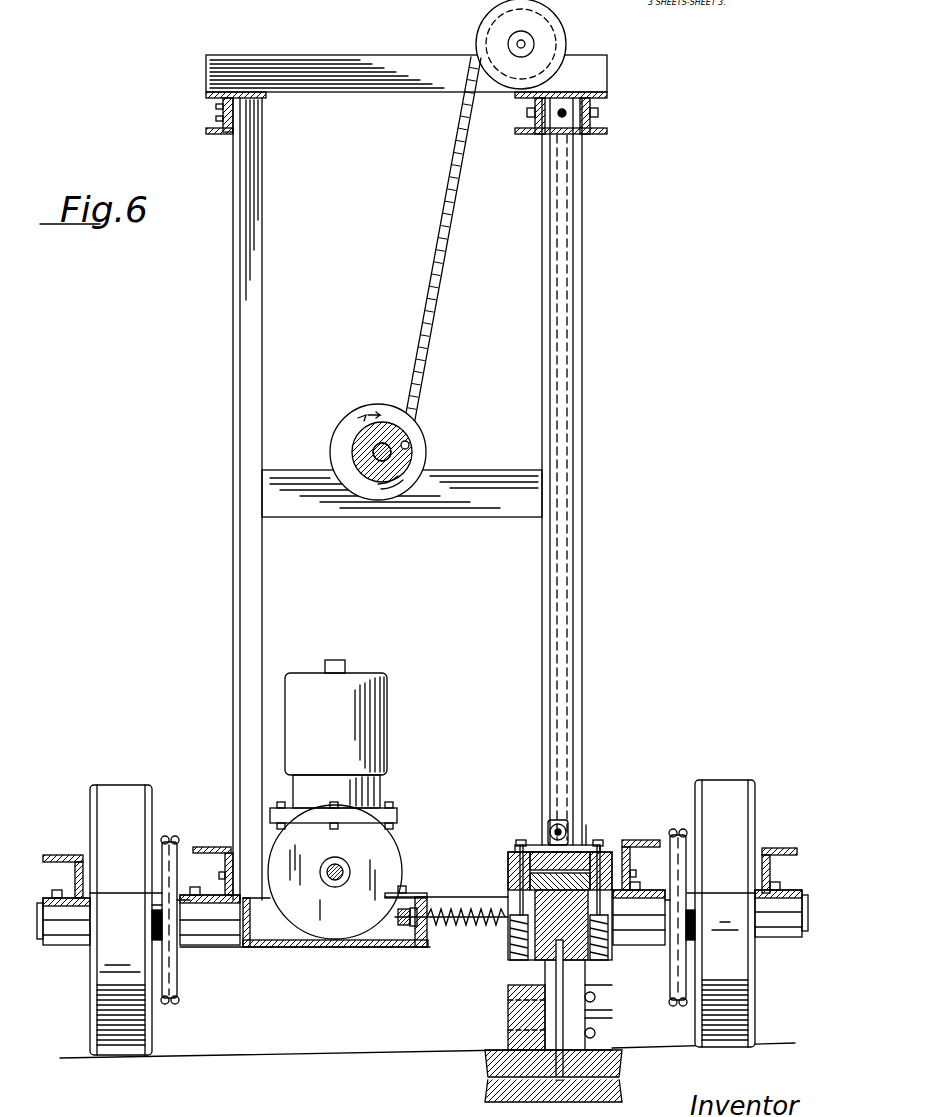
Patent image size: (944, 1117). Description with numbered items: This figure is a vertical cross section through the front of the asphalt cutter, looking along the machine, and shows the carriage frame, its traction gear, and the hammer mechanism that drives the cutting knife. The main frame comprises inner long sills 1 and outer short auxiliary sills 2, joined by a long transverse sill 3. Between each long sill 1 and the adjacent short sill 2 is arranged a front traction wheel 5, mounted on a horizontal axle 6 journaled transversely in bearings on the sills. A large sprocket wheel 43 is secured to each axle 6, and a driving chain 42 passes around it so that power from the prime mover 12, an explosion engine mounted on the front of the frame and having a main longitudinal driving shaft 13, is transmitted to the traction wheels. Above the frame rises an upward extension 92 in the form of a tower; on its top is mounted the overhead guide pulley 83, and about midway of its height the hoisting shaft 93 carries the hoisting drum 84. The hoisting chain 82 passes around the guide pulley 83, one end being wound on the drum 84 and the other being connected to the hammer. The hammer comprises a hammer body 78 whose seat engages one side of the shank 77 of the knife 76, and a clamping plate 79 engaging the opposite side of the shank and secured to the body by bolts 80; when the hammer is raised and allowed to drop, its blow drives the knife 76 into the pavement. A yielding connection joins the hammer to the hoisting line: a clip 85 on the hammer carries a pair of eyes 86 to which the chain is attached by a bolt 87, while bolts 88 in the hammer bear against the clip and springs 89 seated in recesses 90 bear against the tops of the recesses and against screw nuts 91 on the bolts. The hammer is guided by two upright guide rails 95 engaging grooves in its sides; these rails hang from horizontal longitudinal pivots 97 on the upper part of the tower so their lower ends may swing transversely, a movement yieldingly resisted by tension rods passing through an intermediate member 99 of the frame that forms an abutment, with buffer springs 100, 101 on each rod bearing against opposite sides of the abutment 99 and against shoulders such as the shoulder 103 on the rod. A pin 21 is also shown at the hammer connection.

The inner long sill 1 is at (215, 842).
The outer short auxiliary sill 2 is at (58, 855).
The long transverse sill 3 is at (446, 886).
The front traction wheel 5 is at (422, 917).
The horizontal axle 6 is at (43, 940).
The prime mover 12 is at (625, 947).
The main longitudinal driving shaft 13 is at (355, 855).
The pin 21 is at (575, 845).
The driving chain 42 is at (178, 1003).
The large sprocket wheel 43 is at (178, 968).
The knife 76 is at (490, 1080).
The shank 77 is at (510, 968).
The hammer body 78 is at (510, 888).
The clamping plate 79 is at (600, 1016).
The bolt 80 is at (598, 995).
The hoisting chain 82 is at (433, 300).
The guide pulley 83 is at (566, 44).
The hoisting drum 84 is at (360, 435).
The clip 85 is at (520, 848).
The eye 86 is at (566, 828).
The bolt 87 is at (550, 828).
The bolt 88 is at (512, 851).
The spring 89 is at (506, 935).
The recess 90 is at (512, 975).
The screw nut 91 is at (512, 985).
The upward extension 92 is at (240, 300).
The hoisting shaft 93 is at (355, 455).
The guide rail 95 is at (553, 392).
The horizontal longitudinal pivot 97 is at (590, 120).
The intermediate member 99 is at (418, 897).
The buffer spring 100 is at (405, 927).
The buffer spring 101 is at (450, 925).
The shoulder 103 is at (413, 927).